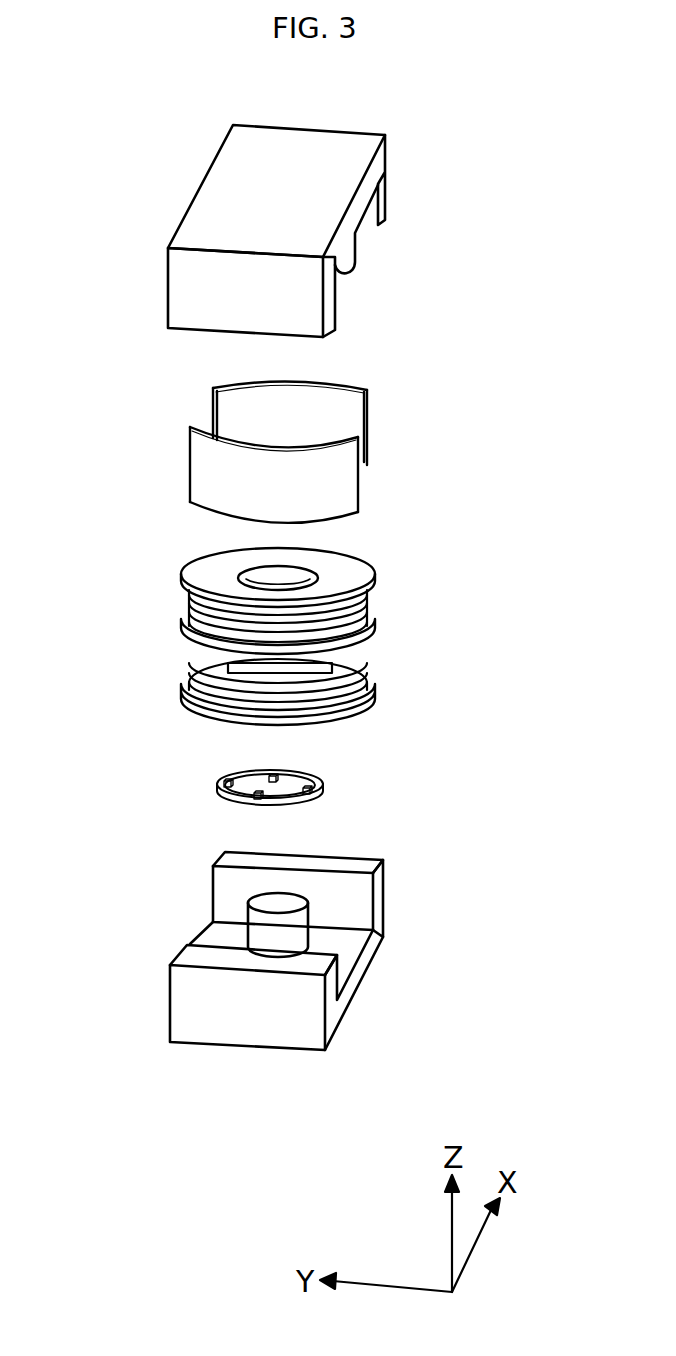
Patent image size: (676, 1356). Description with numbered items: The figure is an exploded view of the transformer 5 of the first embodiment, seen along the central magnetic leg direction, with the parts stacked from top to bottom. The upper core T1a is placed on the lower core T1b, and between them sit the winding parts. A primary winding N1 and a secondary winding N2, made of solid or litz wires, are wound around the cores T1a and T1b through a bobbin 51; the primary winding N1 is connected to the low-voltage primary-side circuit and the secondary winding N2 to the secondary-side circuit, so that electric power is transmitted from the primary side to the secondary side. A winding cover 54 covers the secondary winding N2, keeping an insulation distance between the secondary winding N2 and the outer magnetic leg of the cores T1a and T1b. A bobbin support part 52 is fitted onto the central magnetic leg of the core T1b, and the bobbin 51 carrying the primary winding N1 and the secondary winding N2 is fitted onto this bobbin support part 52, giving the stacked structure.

The transformer 5 is at (90, 155).
The core T1a is at (347, 180).
The winding cover 54 is at (367, 422).
The bobbin 51 is at (347, 572).
The secondary winding N2 is at (372, 620).
The primary winding N1 is at (372, 684).
The bobbin support part 52 is at (325, 787).
The core T1b is at (383, 895).